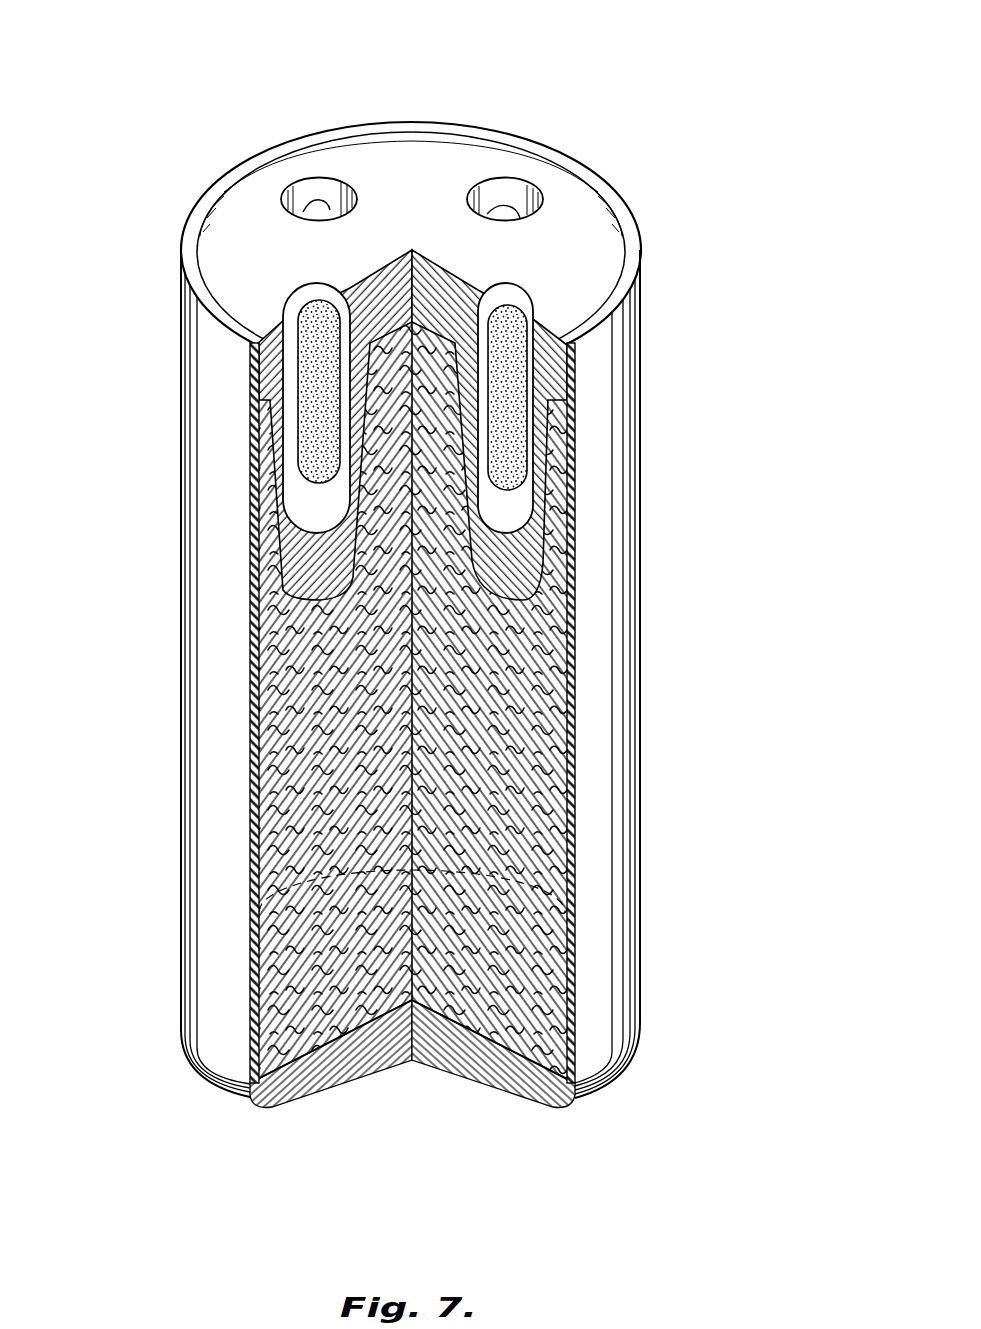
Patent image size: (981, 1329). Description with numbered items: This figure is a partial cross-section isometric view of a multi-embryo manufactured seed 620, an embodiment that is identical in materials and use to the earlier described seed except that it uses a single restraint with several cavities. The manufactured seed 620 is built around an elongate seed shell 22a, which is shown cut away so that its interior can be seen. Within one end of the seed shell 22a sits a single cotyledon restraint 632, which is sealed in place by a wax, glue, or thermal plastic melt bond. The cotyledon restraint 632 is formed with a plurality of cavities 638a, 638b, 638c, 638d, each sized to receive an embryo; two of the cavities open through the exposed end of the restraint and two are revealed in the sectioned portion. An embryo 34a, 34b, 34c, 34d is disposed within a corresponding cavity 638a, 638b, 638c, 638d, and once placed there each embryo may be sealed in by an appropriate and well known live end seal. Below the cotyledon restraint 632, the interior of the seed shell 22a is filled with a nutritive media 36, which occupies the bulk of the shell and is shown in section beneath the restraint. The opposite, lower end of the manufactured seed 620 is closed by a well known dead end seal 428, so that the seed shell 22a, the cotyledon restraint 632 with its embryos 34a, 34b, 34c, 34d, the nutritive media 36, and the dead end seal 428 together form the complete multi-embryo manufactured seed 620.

The seed shell 22a is at (182, 387).
The manufactured seed 620 is at (645, 567).
The cotyledon restraint 632 is at (500, 162).
The embryo 34a is at (316, 212).
The embryo 34b is at (498, 212).
The embryo 34c is at (540, 497).
The embryo 34d is at (298, 488).
The cavity 638a is at (318, 208).
The cavity 638b is at (500, 212).
The cavity 638c is at (533, 302).
The cavity 638d is at (272, 560).
The nutritive media 36 is at (545, 722).
The dead end seal 428 is at (493, 1092).